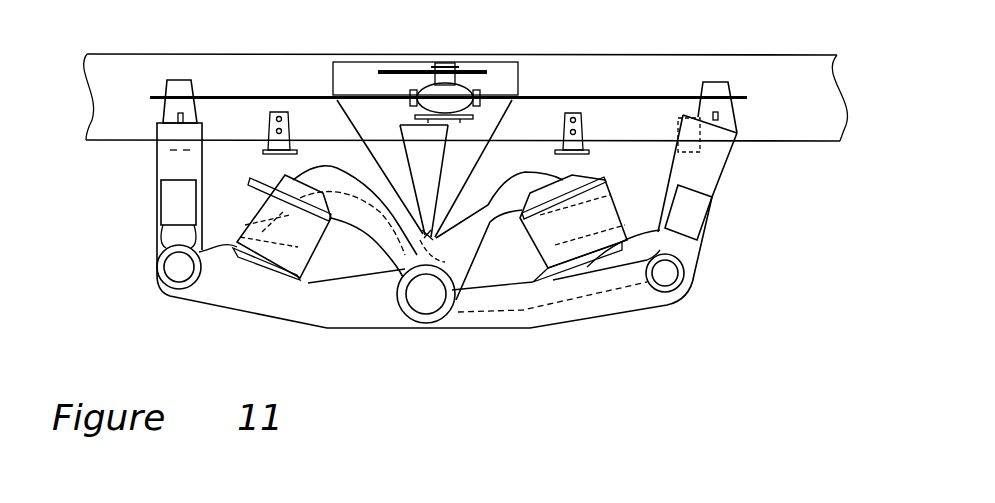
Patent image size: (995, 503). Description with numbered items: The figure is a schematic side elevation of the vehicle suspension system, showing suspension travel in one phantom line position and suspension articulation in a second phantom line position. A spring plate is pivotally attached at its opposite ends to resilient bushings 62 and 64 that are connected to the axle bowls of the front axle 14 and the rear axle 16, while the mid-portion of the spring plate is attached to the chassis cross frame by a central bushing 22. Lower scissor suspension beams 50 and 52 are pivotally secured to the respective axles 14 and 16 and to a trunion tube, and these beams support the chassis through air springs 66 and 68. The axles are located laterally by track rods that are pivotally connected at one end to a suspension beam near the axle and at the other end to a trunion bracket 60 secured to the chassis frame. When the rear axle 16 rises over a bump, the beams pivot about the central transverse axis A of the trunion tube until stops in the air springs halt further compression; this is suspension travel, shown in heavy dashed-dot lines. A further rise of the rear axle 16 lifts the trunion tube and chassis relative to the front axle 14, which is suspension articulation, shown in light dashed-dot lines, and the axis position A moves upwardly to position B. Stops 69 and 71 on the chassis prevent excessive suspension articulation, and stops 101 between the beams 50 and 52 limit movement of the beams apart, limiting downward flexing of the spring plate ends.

The resilient bushing 62 is at (178, 70).
The resilient bushing 64 is at (727, 82).
The trunion bracket 60 is at (333, 86).
The central bushing 22 is at (467, 82).
The stop 69 is at (278, 100).
The stop 71 is at (172, 115).
The front axle 14 is at (163, 200).
The stop 101 is at (412, 195).
The air spring 66 is at (262, 180).
The lower scissor suspension beam 50 is at (282, 295).
The central axis of the trunion tube A is at (425, 303).
The raised position of the trunion tube axis B is at (442, 237).
The air spring 68 is at (585, 282).
The lower scissor suspension beam 52 is at (627, 300).
The rear axle 16 is at (712, 203).